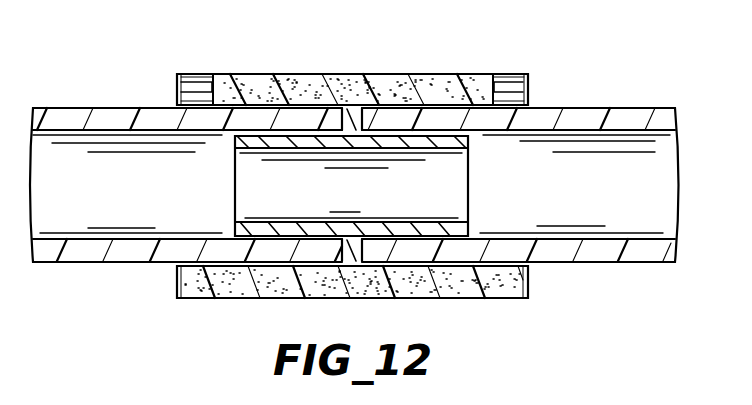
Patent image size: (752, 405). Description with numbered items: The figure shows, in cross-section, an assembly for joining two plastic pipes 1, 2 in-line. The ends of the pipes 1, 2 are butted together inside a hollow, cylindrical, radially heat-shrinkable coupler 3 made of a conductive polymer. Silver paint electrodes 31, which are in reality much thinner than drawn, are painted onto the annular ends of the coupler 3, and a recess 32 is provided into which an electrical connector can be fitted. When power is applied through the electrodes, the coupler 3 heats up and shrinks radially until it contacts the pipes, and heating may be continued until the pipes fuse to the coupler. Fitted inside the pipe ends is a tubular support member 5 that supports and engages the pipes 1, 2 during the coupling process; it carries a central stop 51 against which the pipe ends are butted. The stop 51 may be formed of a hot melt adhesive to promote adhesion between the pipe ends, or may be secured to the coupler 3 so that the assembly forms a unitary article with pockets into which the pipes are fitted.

The plastic pipe 1 is at (133, 250).
The plastic pipe 2 is at (555, 248).
The coupler 3 is at (356, 88).
The tubular support member 5 is at (307, 138).
The silver paint electrode 31 is at (175, 98).
The recess 32 is at (508, 88).
The central stop 51 is at (363, 112).